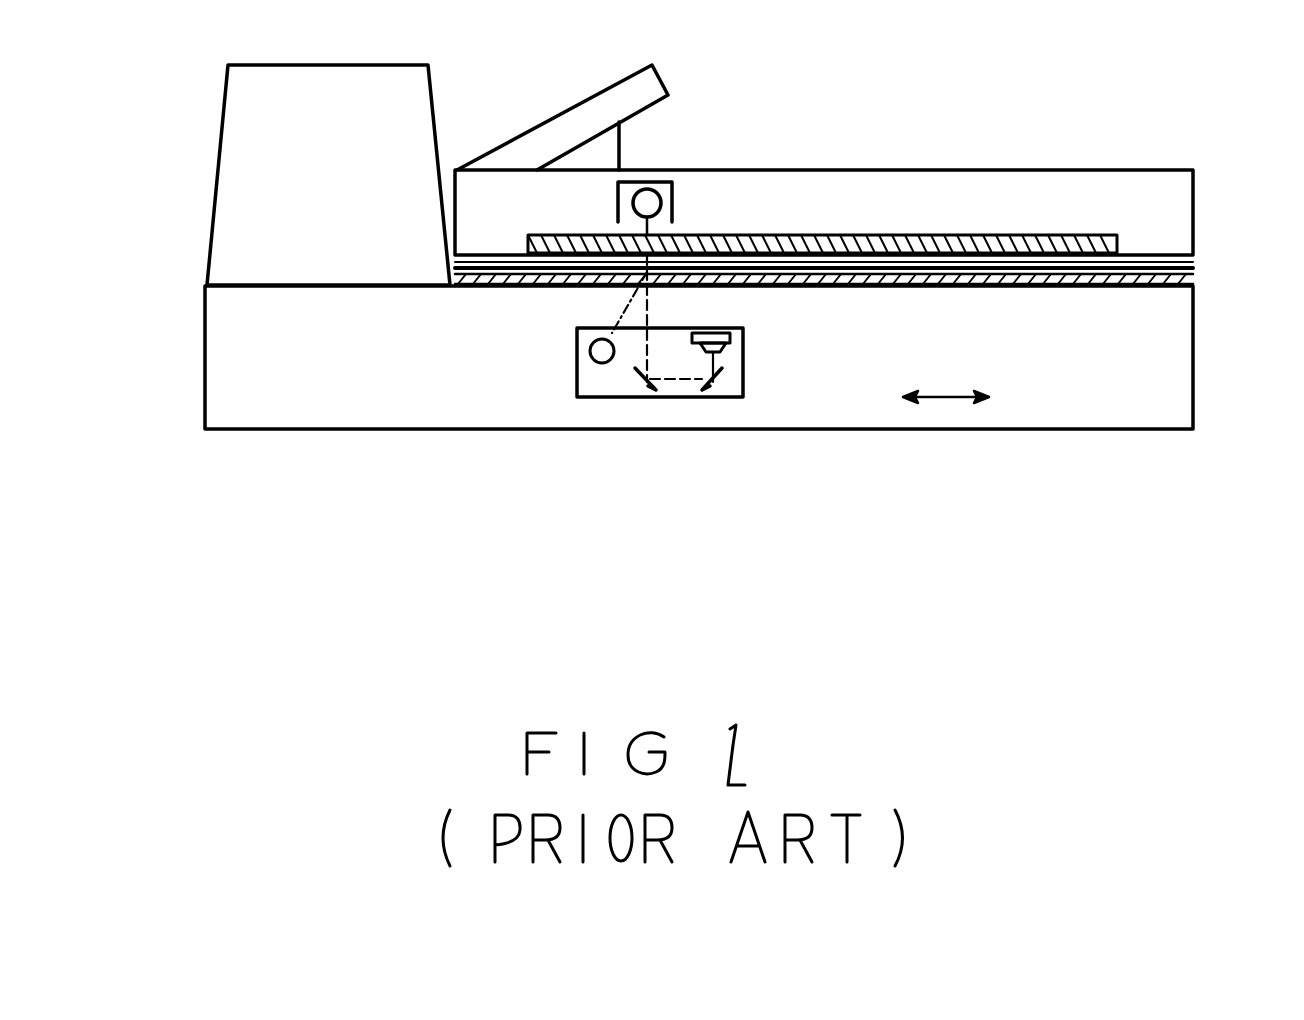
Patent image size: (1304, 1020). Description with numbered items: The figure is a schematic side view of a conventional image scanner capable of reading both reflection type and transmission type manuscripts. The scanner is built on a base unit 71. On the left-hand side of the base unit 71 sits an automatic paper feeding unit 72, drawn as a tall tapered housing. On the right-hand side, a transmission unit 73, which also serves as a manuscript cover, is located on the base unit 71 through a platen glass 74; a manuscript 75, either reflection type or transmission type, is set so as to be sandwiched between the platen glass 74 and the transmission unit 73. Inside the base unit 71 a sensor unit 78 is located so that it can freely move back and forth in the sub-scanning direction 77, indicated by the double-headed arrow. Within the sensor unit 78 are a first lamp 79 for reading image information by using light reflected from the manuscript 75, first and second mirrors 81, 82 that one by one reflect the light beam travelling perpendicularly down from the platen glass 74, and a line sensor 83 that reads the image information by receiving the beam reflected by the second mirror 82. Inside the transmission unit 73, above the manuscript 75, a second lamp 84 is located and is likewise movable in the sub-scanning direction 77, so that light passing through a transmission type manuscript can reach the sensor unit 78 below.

The base unit 71 is at (1195, 362).
The automatic paper feeding unit 72 is at (333, 66).
The transmission unit 73 is at (910, 171).
The platen glass 74 is at (1195, 283).
The manuscript 75 is at (1195, 264).
The sub-scanning direction 77 is at (935, 397).
The sensor unit 78 is at (743, 377).
The first lamp 79 is at (590, 350).
The first mirror 81 is at (647, 398).
The second mirror 82 is at (714, 398).
The line sensor 83 is at (743, 334).
The second lamp 84 is at (648, 181).